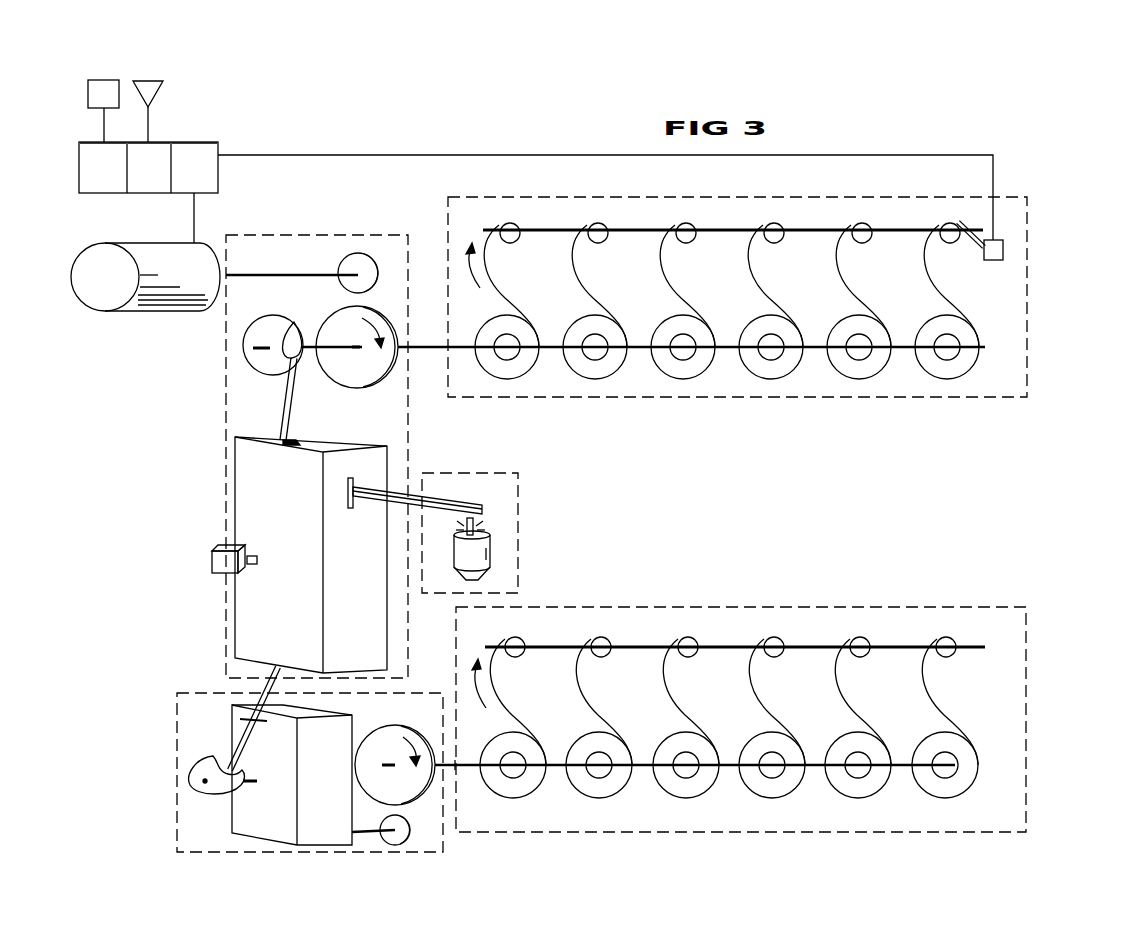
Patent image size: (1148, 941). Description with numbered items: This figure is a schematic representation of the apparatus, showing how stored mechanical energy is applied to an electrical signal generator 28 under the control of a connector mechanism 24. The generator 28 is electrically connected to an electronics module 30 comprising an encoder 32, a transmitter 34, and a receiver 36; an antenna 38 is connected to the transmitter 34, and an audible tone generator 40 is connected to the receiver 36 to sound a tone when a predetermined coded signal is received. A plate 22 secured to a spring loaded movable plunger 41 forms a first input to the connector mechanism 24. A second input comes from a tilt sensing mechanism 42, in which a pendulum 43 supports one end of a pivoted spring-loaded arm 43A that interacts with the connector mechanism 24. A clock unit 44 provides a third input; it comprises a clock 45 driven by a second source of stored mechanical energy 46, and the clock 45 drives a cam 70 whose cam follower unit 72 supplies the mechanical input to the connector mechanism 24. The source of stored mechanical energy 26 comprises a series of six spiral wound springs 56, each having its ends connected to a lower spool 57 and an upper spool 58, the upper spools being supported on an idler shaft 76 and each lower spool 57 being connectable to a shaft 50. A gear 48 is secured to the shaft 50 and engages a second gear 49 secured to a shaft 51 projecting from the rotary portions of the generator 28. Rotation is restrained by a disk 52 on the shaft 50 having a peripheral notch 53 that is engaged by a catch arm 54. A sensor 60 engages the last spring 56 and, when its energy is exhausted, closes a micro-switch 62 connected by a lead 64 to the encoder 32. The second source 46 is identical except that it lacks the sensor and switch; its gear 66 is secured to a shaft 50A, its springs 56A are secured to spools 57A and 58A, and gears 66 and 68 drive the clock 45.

The plate 22 is at (220, 559).
The connector mechanism 24 is at (218, 505).
The source of stored mechanical energy 26 is at (664, 404).
The electrical signal generator 28 is at (162, 313).
The electronics module 30 is at (222, 140).
The encoder 32 is at (210, 180).
The transmitter 34 is at (148, 185).
The receiver 36 is at (101, 185).
The antenna 38 is at (160, 81).
The audible tone generator 40 is at (109, 80).
The spring loaded movable plunger 41 is at (257, 558).
The tilt sensing mechanism 42 is at (528, 510).
The pendulum 43 is at (492, 556).
The pivoted spring-loaded arm 43A is at (440, 498).
The clock unit 44 is at (168, 796).
The clock 45 is at (256, 807).
The second source of stored mechanical energy 46 is at (732, 600).
The gear 48 is at (388, 312).
The second gear 49 is at (372, 258).
The shaft 50 is at (420, 350).
The shaft 50A is at (460, 770).
The shaft 51 is at (277, 273).
The disk 52 is at (253, 357).
The notch 53 is at (294, 322).
The catch arm 54 is at (296, 406).
The spiral wound spring 56 is at (530, 373).
The spring 56A is at (536, 792).
The spool 57 is at (500, 352).
The spool 57A is at (512, 770).
The spool 58 is at (513, 226).
The spool 58A is at (521, 640).
The sensor 60 is at (962, 222).
The micro-switch 62 is at (995, 261).
The lead 64 is at (858, 155).
The gear 66 is at (420, 740).
The gear 68 is at (400, 824).
The cam 70 is at (200, 765).
The cam follower unit 72 is at (266, 686).
The idler shaft 76 is at (505, 643).